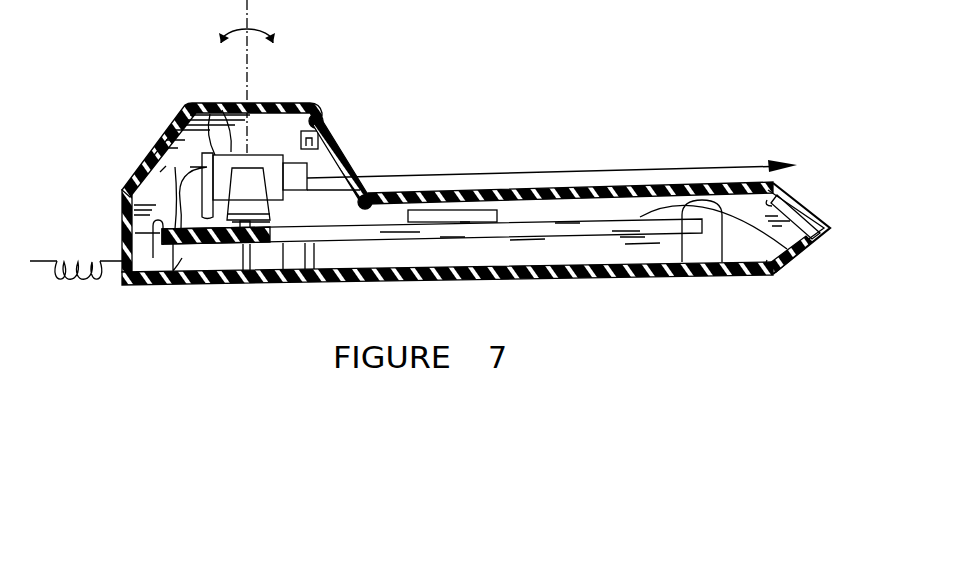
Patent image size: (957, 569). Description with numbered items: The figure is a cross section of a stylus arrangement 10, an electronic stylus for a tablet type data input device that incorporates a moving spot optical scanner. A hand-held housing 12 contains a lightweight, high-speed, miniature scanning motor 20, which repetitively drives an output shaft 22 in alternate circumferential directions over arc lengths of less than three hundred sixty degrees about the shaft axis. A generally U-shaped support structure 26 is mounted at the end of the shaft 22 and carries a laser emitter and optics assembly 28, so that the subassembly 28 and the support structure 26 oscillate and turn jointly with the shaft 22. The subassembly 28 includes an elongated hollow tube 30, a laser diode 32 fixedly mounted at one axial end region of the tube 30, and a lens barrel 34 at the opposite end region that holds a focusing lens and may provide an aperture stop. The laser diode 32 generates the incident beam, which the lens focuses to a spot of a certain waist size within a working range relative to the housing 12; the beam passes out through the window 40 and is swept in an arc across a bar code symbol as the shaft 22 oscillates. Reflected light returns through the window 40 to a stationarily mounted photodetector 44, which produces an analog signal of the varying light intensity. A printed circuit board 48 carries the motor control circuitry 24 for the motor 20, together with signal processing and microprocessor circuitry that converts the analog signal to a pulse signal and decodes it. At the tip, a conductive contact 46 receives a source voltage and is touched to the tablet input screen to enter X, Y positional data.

The stylus arrangement 10 is at (633, 121).
The hand-held housing 12 is at (121, 225).
The scanning motor 20 is at (156, 283).
The output shaft 22 is at (234, 286).
The motor control circuitry 24 is at (478, 214).
The U-shaped support structure 26 is at (270, 213).
The laser emitter and optics assembly 28 is at (268, 137).
The elongated hollow tube 30 is at (217, 113).
The laser diode 32 is at (182, 127).
The lens barrel 34 is at (307, 176).
The window 40 is at (350, 164).
The photodetector 44 is at (320, 118).
The conductive contact 46 is at (797, 204).
The printed circuit board 48 is at (596, 228).